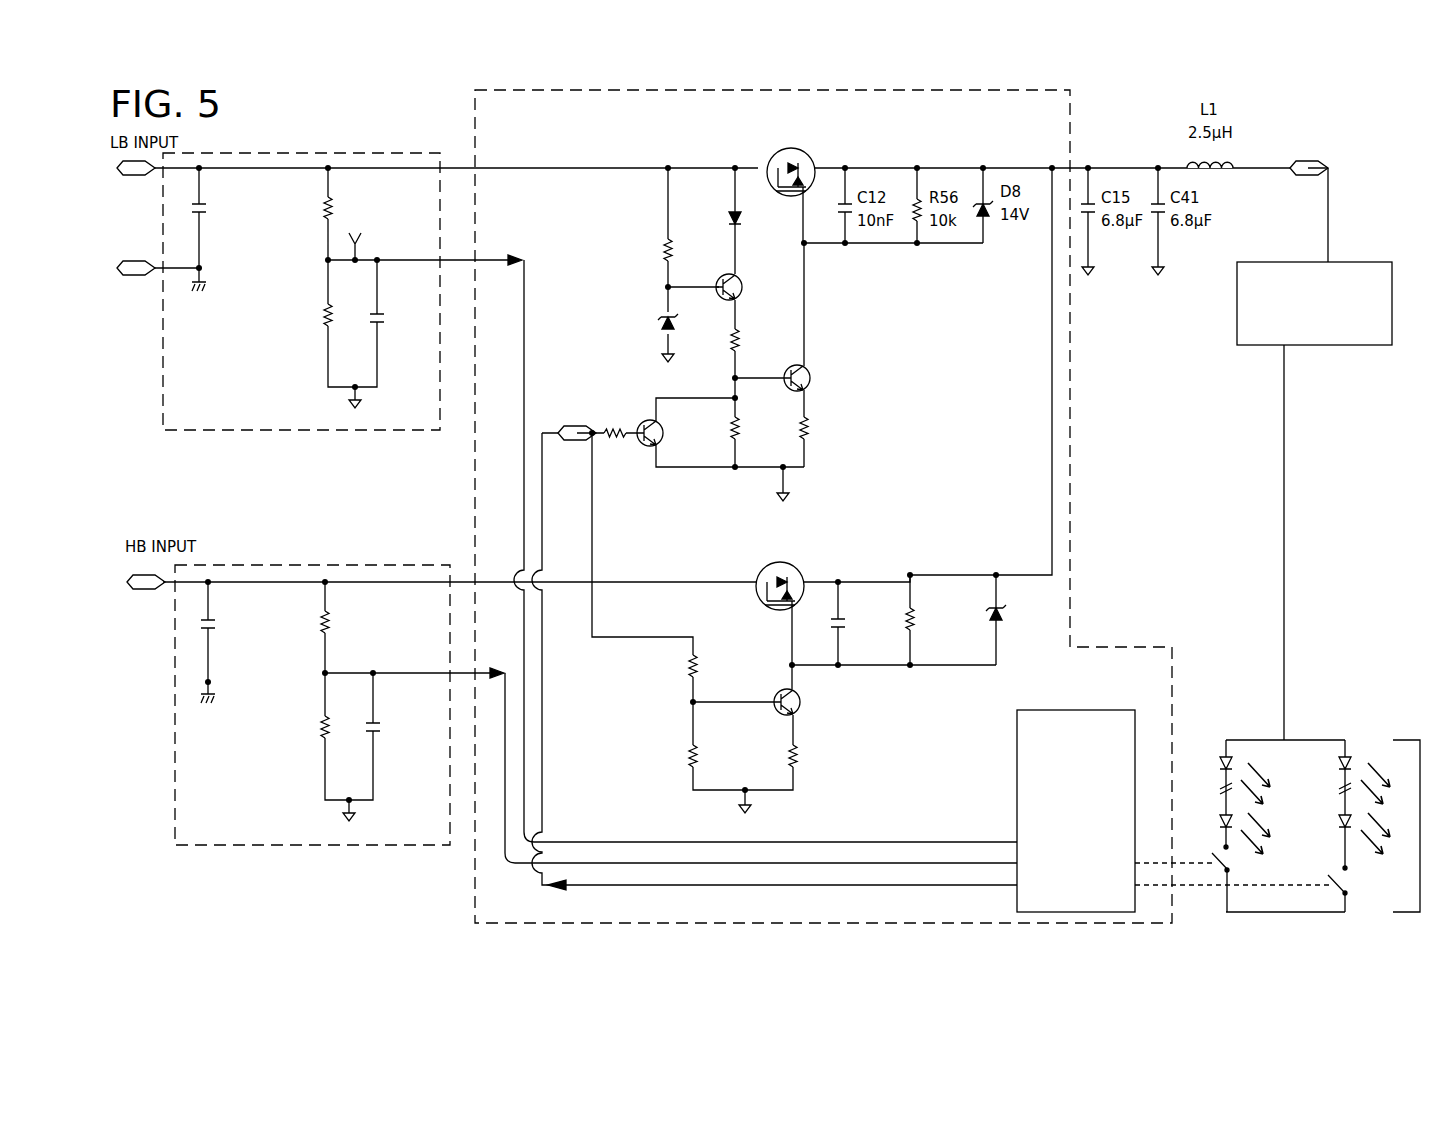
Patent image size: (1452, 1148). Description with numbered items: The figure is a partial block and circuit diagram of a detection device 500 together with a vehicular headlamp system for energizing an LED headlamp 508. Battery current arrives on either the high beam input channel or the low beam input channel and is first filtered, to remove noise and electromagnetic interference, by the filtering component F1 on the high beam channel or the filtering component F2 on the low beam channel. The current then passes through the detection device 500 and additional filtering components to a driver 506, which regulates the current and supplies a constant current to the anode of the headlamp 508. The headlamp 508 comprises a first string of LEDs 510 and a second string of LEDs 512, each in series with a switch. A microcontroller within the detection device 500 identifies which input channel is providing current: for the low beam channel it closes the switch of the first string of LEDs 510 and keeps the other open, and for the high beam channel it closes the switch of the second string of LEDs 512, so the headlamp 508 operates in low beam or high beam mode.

The detection device 500 is at (536, 127).
The driver 506 is at (1360, 262).
The headlamp 508 is at (1407, 740).
The first string of LEDs 510 is at (1223, 738).
The second string of LEDs 512 is at (1320, 738).
The filtering component F1 is at (222, 848).
The filtering component F2 is at (218, 433).